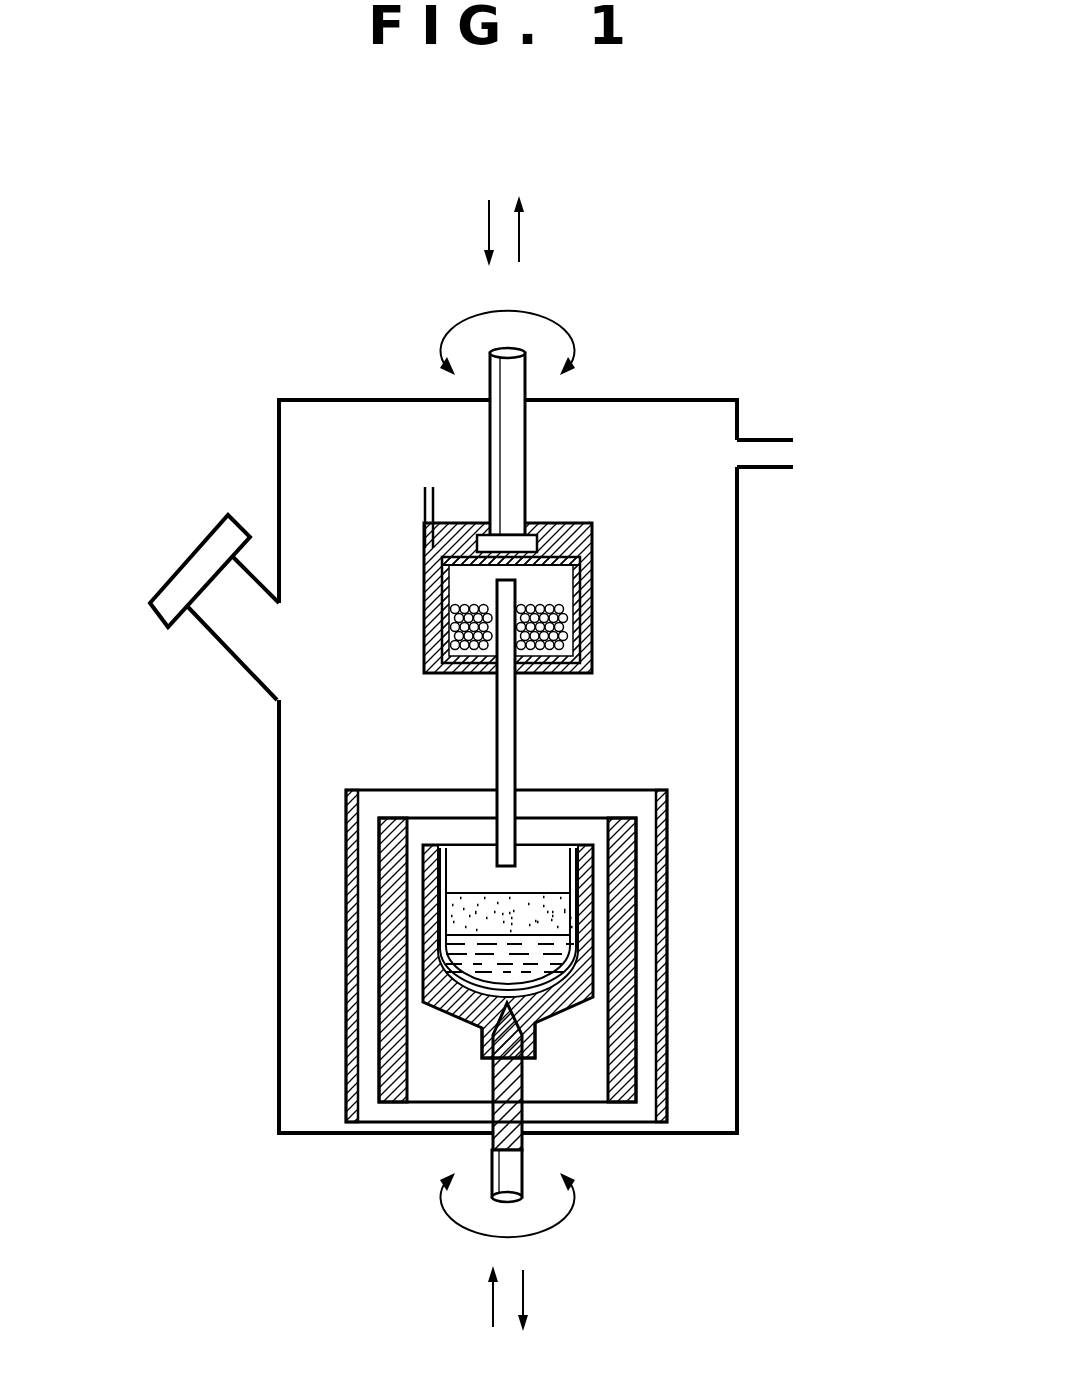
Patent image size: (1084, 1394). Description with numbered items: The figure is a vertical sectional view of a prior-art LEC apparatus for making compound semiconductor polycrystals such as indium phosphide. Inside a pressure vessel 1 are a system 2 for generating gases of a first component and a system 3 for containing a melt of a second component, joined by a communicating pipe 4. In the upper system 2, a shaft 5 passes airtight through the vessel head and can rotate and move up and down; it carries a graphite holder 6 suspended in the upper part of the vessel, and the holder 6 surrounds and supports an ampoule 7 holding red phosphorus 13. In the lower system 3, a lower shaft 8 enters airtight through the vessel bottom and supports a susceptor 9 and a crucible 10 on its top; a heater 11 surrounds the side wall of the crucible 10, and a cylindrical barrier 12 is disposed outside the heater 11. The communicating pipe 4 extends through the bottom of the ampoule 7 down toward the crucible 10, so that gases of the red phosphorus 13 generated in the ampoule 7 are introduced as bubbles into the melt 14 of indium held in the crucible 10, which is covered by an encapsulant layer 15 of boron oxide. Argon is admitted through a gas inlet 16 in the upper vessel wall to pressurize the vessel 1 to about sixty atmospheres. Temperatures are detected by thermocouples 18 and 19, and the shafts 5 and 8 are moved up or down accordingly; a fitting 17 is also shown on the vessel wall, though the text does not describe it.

The pressure vessel 1 is at (657, 398).
The system for generating gases of a first component 2 is at (571, 502).
The system for containing a melt of a second component 3 is at (395, 778).
The communicating pipe 4 is at (512, 757).
The shaft 5 is at (505, 428).
The graphite holder 6 is at (592, 552).
The ampoule 7 is at (595, 635).
The lower shaft 8 is at (492, 1162).
The susceptor 9 is at (572, 1028).
The crucible 10 is at (597, 975).
The heater 11 is at (630, 852).
The cylindrical barrier 12 is at (670, 912).
The red phosphorus 13 is at (543, 664).
The melt 14 is at (440, 972).
The encapsulant layer 15 is at (455, 920).
The gas inlet 16 is at (767, 437).
The gas inlet port 17 is at (197, 548).
The thermocouple 18 is at (522, 1118).
The thermocouple 19 is at (428, 487).